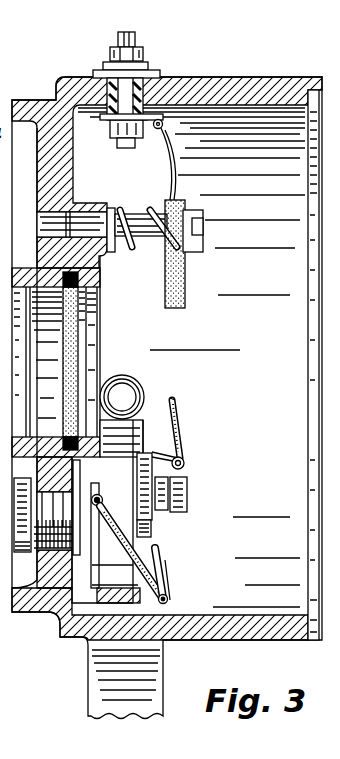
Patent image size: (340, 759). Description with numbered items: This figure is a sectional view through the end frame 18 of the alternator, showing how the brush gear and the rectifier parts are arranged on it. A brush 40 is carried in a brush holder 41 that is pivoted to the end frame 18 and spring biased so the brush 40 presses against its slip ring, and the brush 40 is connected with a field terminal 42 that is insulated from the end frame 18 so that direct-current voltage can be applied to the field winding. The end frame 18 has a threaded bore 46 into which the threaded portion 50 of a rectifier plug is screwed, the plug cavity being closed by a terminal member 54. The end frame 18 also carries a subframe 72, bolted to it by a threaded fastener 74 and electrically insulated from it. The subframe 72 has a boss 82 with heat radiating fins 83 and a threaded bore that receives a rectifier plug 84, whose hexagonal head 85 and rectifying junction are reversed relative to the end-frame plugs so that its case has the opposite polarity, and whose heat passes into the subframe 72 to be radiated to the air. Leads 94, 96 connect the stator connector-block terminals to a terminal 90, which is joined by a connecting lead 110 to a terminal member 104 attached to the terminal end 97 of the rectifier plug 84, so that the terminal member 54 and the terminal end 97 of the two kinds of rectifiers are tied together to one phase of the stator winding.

The end frame 18 is at (272, 92).
The field terminal 42 is at (138, 37).
The brush holder 41 is at (163, 188).
The brush 40 is at (186, 273).
The threaded bore 46 is at (40, 498).
The threaded portion 50 is at (55, 543).
The terminal member 54 is at (86, 507).
The terminal 90 is at (103, 500).
The threaded fastener 74 is at (138, 381).
The rectifier plug 84 is at (152, 528).
The boss 82 is at (166, 572).
The lead 96 is at (170, 583).
The lead 94 is at (178, 603).
The subframe 72 is at (168, 604).
The heat radiating fin 83 is at (180, 421).
The connecting lead 110 is at (181, 411).
The hexagonal head 85 is at (184, 440).
The terminal member 104 is at (186, 469).
The terminal end 97 is at (190, 494).